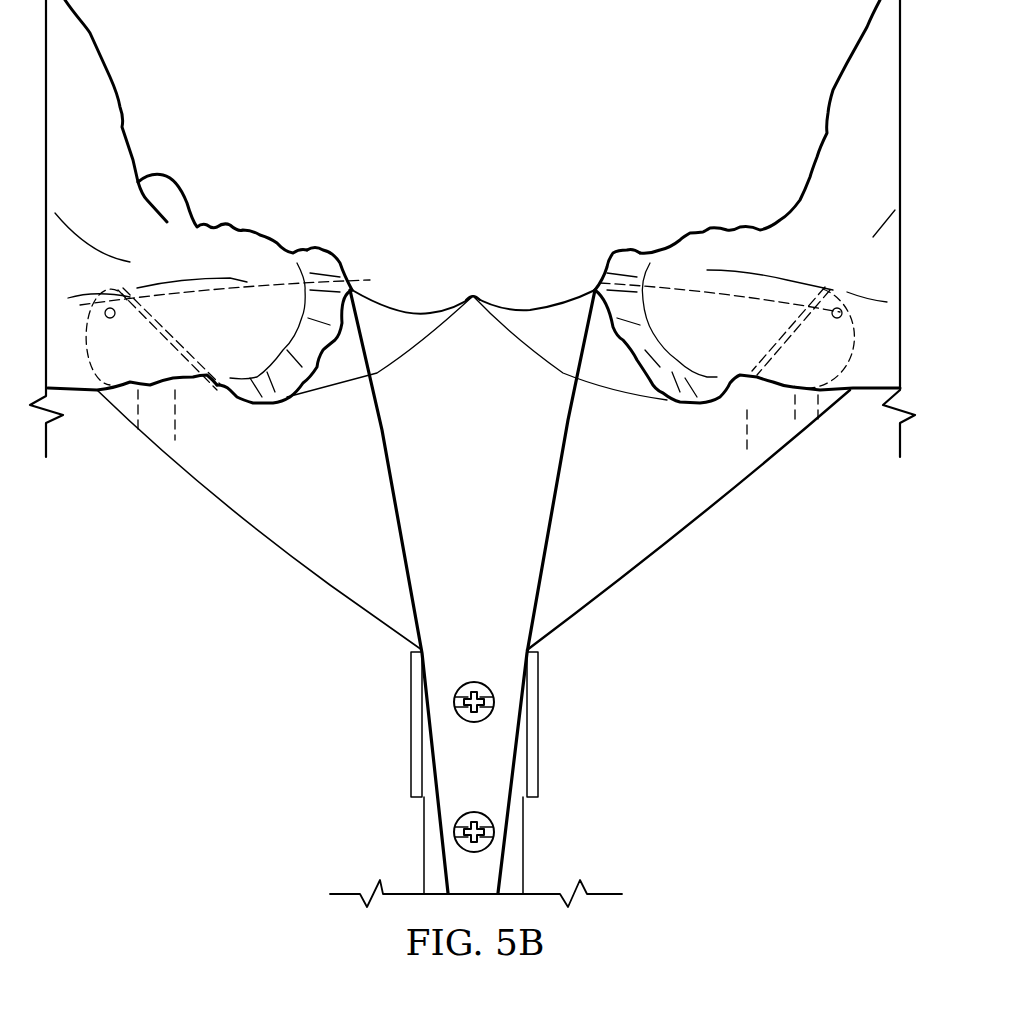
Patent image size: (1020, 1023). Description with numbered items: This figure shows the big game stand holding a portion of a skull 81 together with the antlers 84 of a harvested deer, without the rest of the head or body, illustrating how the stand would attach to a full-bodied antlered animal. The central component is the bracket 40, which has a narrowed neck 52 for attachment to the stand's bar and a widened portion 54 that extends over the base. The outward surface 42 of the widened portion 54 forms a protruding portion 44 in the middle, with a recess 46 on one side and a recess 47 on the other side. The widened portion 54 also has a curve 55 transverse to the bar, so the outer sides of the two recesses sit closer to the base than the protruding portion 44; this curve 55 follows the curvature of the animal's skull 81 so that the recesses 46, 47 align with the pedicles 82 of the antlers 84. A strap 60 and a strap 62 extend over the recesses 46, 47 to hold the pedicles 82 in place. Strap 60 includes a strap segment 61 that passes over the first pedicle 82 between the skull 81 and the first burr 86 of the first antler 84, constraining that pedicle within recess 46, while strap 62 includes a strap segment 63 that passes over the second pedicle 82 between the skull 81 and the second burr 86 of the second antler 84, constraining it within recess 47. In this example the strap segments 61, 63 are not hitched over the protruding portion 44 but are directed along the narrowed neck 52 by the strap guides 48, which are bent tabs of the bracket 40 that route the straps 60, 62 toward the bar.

The bracket 40 is at (293, 561).
The outward surface 42 is at (537, 348).
The protruding portion 44 is at (474, 296).
The recess 46 is at (421, 342).
The recess 47 is at (560, 364).
The strap guides 48 is at (410, 723).
The narrowed neck 52 is at (423, 835).
The widened portion 54 is at (257, 522).
The curve 55 is at (787, 433).
The strap 60 is at (383, 460).
The strap segment 61 is at (352, 290).
The strap 62 is at (552, 520).
The strap segment 63 is at (595, 290).
The skull 81 is at (438, 311).
The pedicle 82 is at (387, 307).
The antler 84 is at (121, 107).
The burr 86 is at (325, 250).